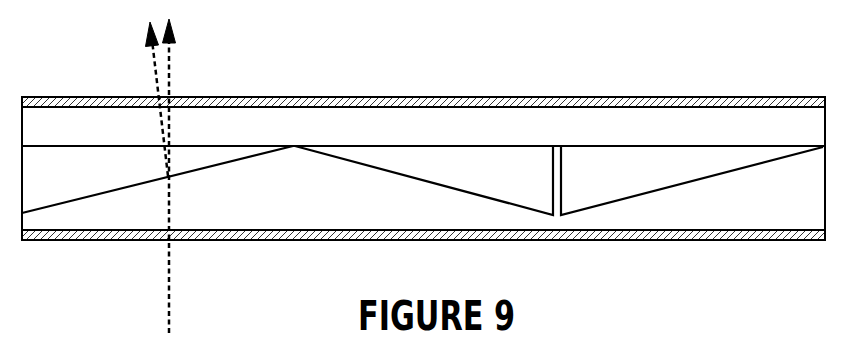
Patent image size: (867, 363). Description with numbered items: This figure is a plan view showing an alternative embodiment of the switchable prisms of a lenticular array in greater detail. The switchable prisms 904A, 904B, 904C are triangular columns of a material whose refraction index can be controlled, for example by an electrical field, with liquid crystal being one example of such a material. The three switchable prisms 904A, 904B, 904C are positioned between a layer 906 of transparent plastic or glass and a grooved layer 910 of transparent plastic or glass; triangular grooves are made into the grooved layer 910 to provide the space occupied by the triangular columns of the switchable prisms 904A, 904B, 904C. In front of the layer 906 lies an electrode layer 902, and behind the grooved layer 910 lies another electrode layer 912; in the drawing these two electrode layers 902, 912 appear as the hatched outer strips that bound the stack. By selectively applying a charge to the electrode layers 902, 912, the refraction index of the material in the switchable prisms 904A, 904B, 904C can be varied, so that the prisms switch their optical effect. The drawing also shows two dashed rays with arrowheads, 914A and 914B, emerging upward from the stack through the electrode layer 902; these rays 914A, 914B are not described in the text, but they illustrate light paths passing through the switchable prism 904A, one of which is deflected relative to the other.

The electrode layer 902 is at (783, 97).
The switchable prism 904A is at (127, 175).
The switchable prism 904B is at (533, 186).
The switchable prism 904C is at (620, 175).
The layer 906 is at (423, 126).
The grooved layer 910 is at (721, 218).
The electrode layer 912 is at (782, 240).
The first light ray 914A is at (170, 70).
The second light ray 914B is at (156, 71).